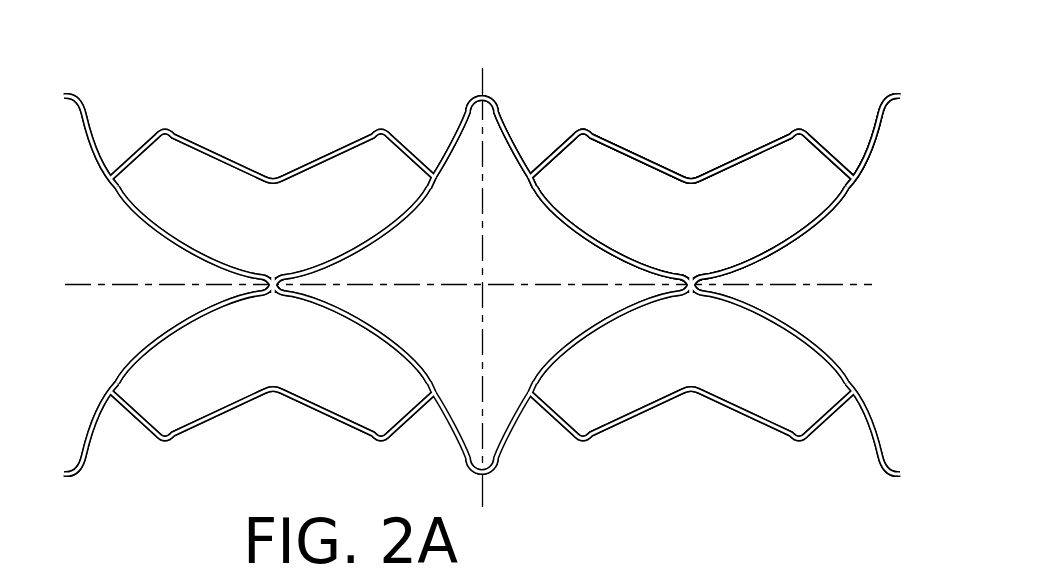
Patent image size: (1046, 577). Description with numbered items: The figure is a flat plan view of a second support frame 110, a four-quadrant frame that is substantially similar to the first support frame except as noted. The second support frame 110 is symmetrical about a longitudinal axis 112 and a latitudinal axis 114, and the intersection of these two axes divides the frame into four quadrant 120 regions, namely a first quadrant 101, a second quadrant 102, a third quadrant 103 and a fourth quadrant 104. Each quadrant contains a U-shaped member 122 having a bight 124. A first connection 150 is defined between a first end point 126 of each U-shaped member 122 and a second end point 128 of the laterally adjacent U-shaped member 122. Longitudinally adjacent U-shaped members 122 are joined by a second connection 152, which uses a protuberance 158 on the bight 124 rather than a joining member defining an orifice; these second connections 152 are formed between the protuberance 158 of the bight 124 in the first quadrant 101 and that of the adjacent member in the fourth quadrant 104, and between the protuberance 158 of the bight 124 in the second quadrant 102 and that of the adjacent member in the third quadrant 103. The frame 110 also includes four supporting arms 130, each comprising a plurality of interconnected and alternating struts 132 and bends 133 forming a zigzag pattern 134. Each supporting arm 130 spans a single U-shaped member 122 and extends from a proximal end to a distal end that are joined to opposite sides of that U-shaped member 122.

The first quadrant 101 is at (847, 33).
The second quadrant 102 is at (115, 73).
The third quadrant 103 is at (87, 527).
The fourth quadrant 104 is at (883, 507).
The second support frame 110 is at (197, 469).
The longitudinal axis 112 is at (485, 502).
The latitudinal axis 114 is at (127, 285).
The quadrant region 120 is at (599, 53).
The U-shaped member 122 is at (512, 133).
The bight 124 is at (687, 272).
The first end point 126 is at (485, 92).
The second end point 128 is at (889, 91).
The supporting arm 130 is at (831, 148).
The strut 132 is at (561, 153).
The bend 133 is at (584, 126).
The zigzag pattern 134 is at (790, 115).
The first connection 150 is at (482, 80).
The second connection 152 is at (674, 281).
The protuberance 158 is at (703, 268).